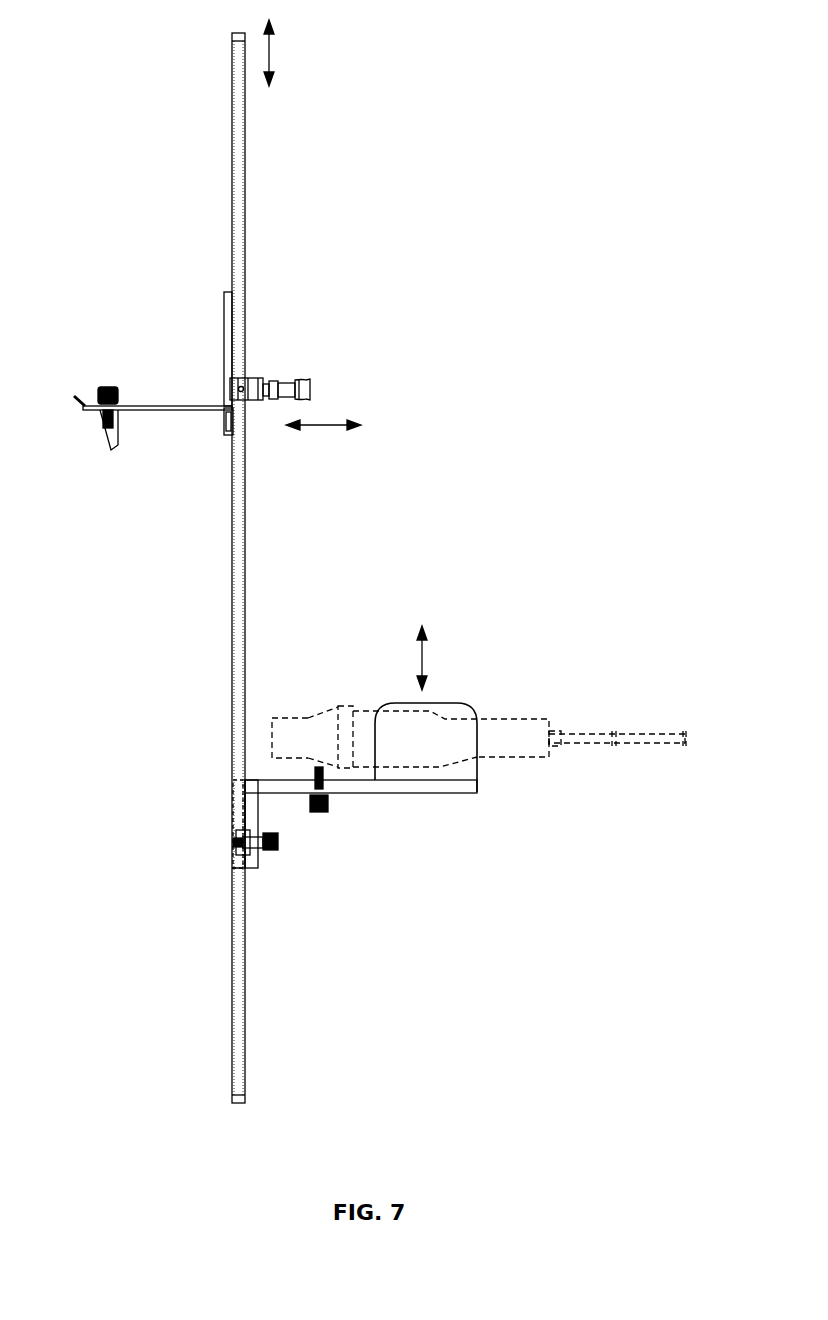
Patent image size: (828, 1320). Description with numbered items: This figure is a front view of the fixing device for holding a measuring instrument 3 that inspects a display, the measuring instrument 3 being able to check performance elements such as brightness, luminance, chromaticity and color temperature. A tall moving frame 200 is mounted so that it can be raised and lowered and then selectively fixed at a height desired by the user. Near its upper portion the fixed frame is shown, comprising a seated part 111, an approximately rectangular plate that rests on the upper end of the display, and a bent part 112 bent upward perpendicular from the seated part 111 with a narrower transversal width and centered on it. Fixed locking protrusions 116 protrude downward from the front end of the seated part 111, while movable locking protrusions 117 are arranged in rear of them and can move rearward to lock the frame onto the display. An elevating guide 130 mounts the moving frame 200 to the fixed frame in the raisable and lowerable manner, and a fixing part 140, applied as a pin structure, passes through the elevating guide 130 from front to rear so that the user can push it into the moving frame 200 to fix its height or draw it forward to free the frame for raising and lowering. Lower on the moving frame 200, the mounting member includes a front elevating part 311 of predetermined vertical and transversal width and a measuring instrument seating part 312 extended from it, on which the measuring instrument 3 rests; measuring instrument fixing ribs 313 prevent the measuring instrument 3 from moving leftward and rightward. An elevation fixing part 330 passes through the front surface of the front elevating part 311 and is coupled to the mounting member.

The moving frame 200 is at (264, 139).
The bent part 112 is at (224, 304).
The seated part 111 is at (167, 411).
The movable locking protrusions 117 is at (106, 387).
The fixed locking protrusions 116 is at (228, 437).
The elevating guide 130 is at (252, 378).
The fixing part 140 is at (296, 382).
The measuring instrument 3 is at (520, 768).
The measuring instrument fixing ribs 313 is at (448, 707).
The measuring instrument seating part 312 is at (398, 789).
The front elevating part 311 is at (256, 818).
The elevation fixing part 330 is at (271, 862).